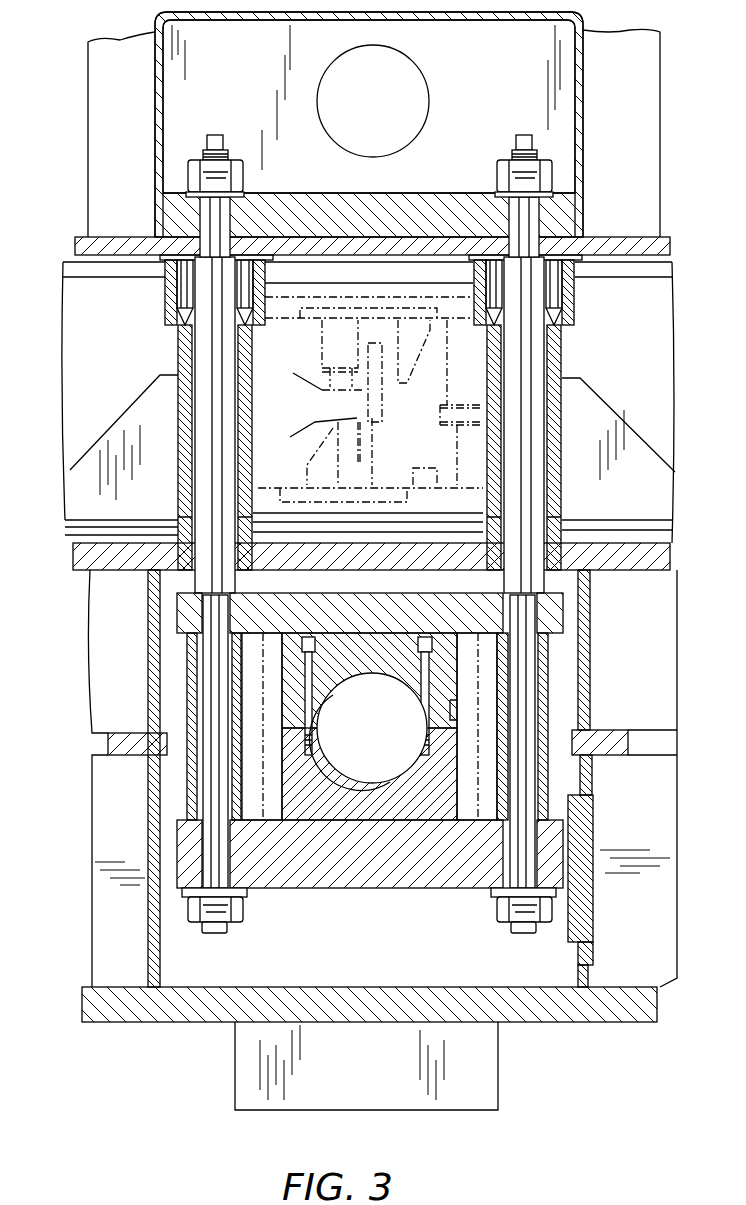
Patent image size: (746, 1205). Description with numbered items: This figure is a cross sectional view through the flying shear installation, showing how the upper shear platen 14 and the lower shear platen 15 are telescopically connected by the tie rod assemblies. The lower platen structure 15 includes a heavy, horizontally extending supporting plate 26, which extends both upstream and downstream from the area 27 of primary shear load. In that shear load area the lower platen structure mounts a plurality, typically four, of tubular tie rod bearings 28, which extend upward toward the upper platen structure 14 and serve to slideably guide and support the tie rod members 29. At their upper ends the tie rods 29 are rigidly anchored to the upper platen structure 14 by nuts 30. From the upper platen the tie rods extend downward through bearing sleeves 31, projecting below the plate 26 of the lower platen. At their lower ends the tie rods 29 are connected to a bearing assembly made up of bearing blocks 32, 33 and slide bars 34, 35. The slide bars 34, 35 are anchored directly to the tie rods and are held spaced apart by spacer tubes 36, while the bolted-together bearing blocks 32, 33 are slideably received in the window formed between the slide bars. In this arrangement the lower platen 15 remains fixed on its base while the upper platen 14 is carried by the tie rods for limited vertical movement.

The upper shear platen 14 is at (124, 185).
The lower shear platen 15 is at (103, 677).
The supporting plate 26 is at (115, 570).
The area of primary shear load 27 is at (416, 460).
The tubular tie rod bearing 28 is at (557, 398).
The tie rod member 29 is at (528, 388).
The nut 30 is at (245, 176).
The bearing sleeve 31 is at (190, 348).
The bearing block 32 is at (362, 820).
The bearing block 33 is at (375, 630).
The slide bar 34 is at (298, 606).
The slide bar 35 is at (291, 889).
The spacer tube 36 is at (190, 800).